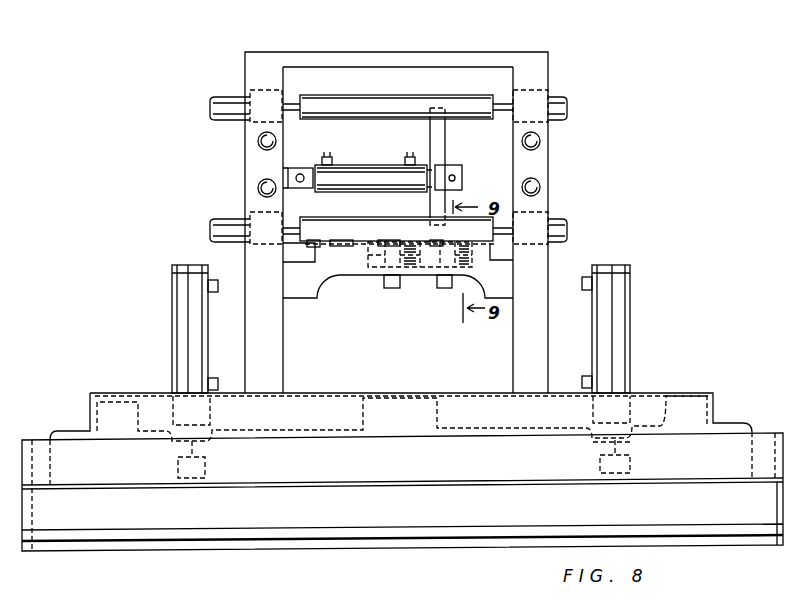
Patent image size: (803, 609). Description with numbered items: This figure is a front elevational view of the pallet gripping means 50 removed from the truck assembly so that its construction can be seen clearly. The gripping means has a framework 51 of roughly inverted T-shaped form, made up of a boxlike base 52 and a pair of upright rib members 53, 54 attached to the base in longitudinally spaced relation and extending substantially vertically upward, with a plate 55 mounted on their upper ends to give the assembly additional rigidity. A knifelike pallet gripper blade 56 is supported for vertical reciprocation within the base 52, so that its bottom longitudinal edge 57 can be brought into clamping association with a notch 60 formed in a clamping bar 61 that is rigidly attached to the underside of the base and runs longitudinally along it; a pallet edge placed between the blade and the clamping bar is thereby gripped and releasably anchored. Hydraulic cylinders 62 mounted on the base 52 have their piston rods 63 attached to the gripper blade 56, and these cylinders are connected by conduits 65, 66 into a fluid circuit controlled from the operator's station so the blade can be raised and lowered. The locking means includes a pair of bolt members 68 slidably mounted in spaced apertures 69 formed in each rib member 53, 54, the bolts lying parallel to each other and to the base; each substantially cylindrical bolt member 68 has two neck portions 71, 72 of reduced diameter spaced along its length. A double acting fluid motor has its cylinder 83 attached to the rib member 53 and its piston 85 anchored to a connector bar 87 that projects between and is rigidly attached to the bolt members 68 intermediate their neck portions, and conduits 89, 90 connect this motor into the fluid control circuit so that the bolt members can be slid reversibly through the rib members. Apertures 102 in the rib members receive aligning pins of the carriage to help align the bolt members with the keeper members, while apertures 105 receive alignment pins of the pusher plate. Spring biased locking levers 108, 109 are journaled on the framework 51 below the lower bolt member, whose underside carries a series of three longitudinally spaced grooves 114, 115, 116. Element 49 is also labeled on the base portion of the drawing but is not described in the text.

The base frame side member 49 is at (730, 482).
The pallet gripping means 50 is at (382, 44).
The framework 51 is at (568, 179).
The boxlike base 52 is at (32, 438).
The upright rib member 53 is at (256, 160).
The upright rib member 54 is at (549, 158).
The plate 55 is at (511, 52).
The pallet gripper blade 56 is at (67, 431).
The bottom longitudinal edge 57 is at (125, 489).
The notch 60 is at (445, 537).
The clamping bar 61 is at (318, 548).
The hydraulic cylinder 62 is at (181, 312).
The piston rod 63 is at (168, 450).
The conduit 65 is at (218, 288).
The conduit 66 is at (218, 378).
The bolt member 68 is at (373, 96).
The aperture 69 is at (252, 92).
The neck portion 71 is at (293, 102).
The neck portion 72 is at (500, 102).
The cylinder 83 is at (374, 166).
The piston 85 is at (455, 170).
The connector bar 87 is at (445, 129).
The conduit 89 is at (326, 157).
The conduit 90 is at (410, 157).
The aperture 102 is at (258, 140).
The aperture 105 is at (258, 186).
The locking lever 108 is at (388, 290).
The locking lever 109 is at (440, 290).
The groove 114 is at (346, 240).
The groove 115 is at (390, 240).
The groove 116 is at (436, 240).